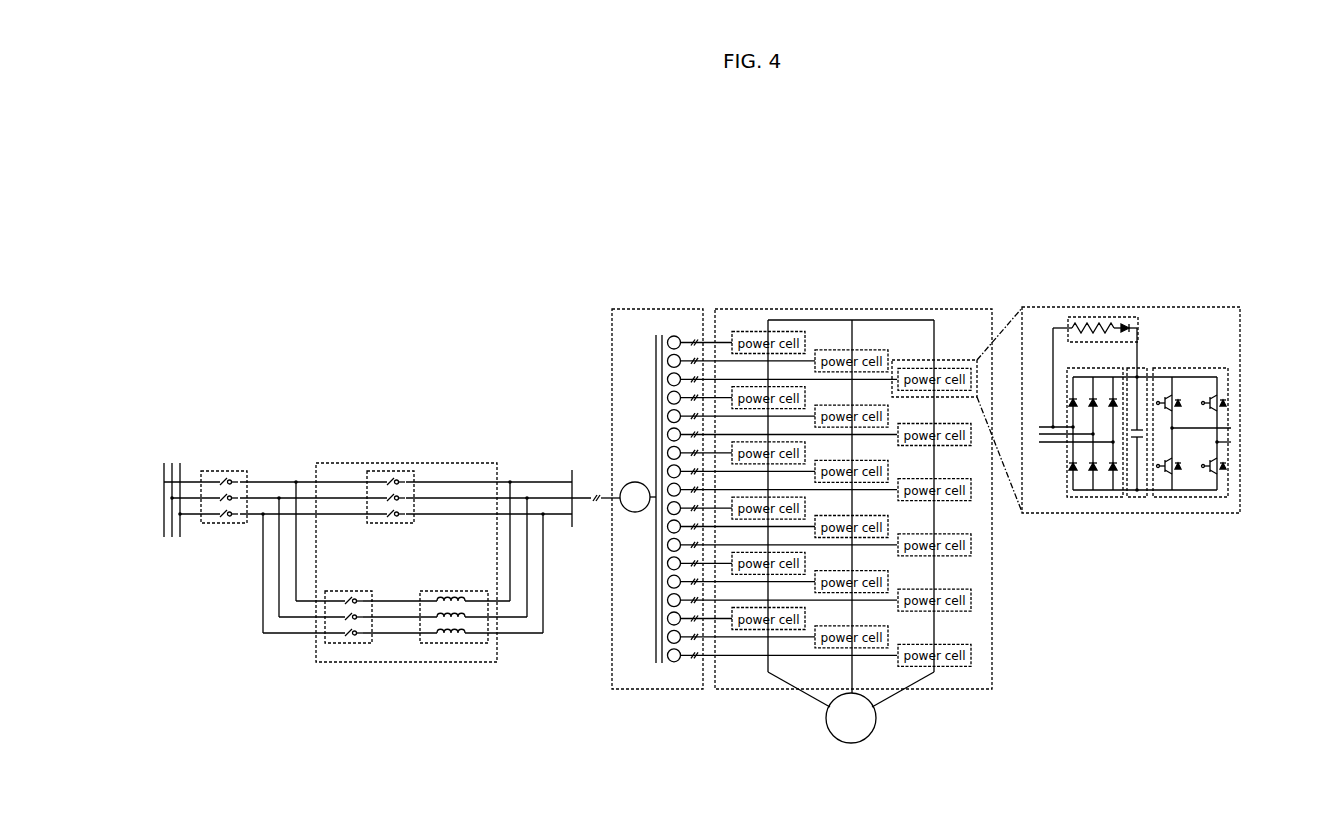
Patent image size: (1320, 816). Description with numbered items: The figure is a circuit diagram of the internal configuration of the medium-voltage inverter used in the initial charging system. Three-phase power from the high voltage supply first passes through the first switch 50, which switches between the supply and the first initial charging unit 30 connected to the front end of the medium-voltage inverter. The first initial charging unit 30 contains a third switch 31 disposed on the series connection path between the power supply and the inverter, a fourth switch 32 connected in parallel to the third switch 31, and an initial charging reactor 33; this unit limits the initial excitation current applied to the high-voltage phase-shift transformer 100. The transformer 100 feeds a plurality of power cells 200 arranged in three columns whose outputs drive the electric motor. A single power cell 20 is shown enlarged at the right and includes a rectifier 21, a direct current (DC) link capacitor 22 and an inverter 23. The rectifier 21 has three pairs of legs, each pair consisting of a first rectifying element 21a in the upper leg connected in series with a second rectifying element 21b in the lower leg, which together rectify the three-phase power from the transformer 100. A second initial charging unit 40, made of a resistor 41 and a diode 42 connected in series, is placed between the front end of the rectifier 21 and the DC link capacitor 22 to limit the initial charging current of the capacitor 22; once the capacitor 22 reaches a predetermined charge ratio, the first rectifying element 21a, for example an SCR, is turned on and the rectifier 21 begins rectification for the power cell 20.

The first switch 50 is at (223, 470).
The first initial charging unit 30 is at (487, 462).
The third switch 31 is at (390, 470).
The fourth switch 32 is at (348, 590).
The initial charging reactor 33 is at (453, 590).
The high-voltage phase-shift transformer 100 is at (665, 309).
The plurality of power cells 200 is at (955, 309).
The power cell 20 is at (1042, 305).
The second initial charging unit 40 is at (1072, 317).
The resistor 41 is at (1105, 317).
The diode 42 is at (1125, 325).
The rectifier 21 is at (1097, 498).
The first rectifying element 21a is at (1070, 390).
The second rectifying element 21b is at (1069, 464).
The direct current (DC) link capacitor 22 is at (1136, 498).
The inverter 23 is at (1190, 498).